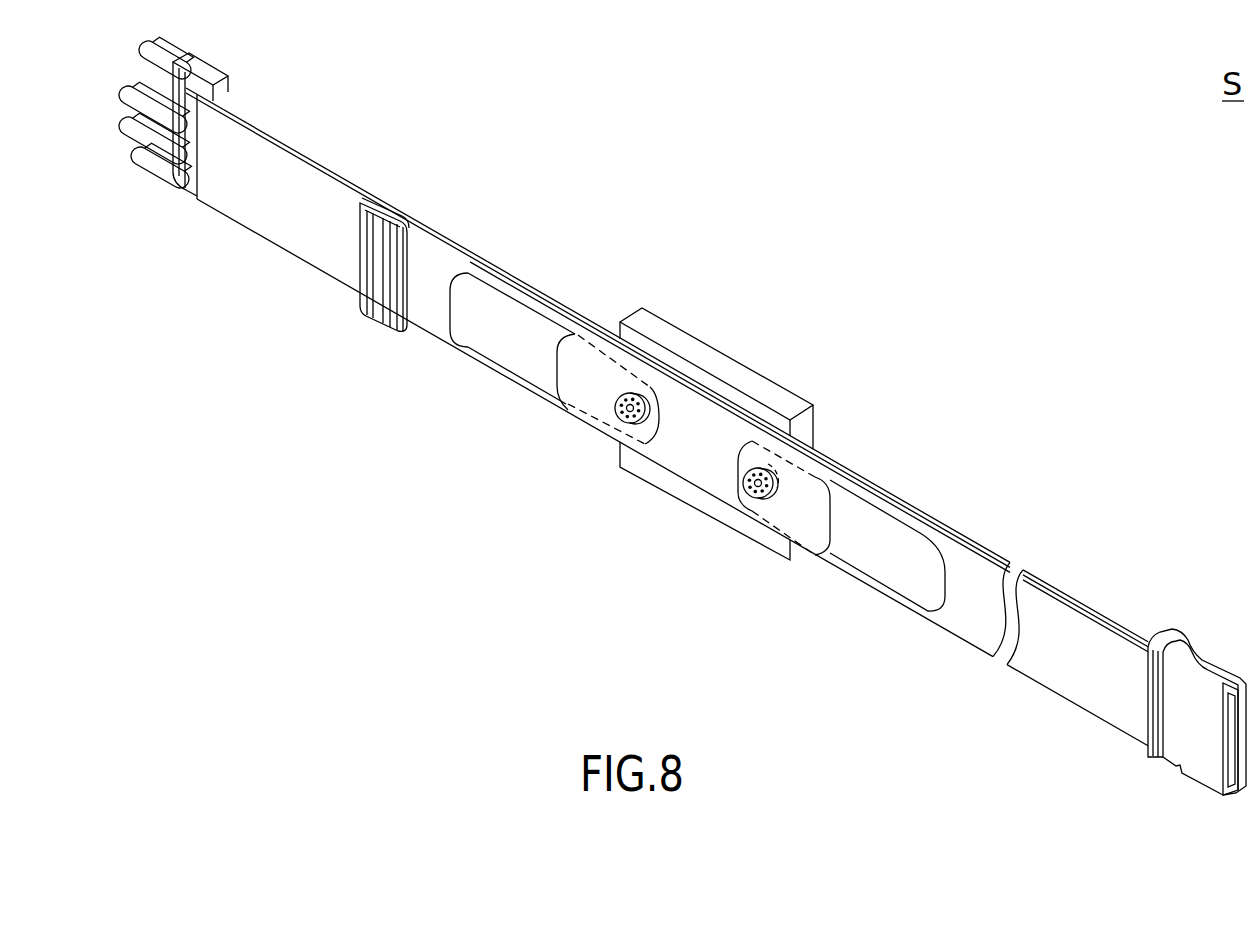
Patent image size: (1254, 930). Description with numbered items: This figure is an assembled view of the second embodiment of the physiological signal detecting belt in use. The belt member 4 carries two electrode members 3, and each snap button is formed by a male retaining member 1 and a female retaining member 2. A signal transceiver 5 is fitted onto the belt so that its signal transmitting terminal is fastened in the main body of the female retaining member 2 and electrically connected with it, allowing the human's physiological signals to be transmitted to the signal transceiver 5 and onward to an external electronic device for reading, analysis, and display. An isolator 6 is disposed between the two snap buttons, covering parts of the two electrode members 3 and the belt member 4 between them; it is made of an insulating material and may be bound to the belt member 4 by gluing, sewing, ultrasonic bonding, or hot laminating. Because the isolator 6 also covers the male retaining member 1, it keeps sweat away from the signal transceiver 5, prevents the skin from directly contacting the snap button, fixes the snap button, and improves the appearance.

The male retaining member 1 is at (756, 505).
The female retaining member 2 is at (795, 473).
The electrode member 3 is at (875, 578).
The belt member 4 is at (990, 544).
The signal transceiver 5 is at (782, 376).
The isolator 6 is at (688, 486).